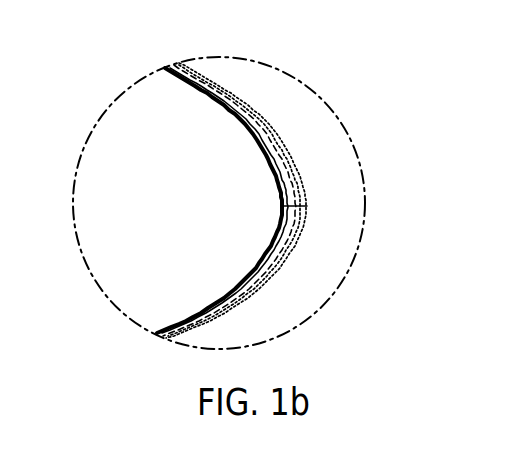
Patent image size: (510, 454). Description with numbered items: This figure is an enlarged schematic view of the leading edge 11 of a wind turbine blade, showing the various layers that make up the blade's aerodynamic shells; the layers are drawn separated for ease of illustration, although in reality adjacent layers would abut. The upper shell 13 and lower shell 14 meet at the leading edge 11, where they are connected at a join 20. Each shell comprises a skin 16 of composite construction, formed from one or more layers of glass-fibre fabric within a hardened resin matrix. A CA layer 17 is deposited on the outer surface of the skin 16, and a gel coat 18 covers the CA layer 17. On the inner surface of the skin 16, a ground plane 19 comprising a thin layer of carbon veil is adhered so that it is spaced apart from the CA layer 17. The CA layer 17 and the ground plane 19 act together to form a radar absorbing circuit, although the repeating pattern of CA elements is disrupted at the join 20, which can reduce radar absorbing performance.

The leading edge 11 is at (324, 82).
The upper shell 13 is at (249, 85).
The lower shell 14 is at (219, 222).
The skin 16 is at (219, 96).
The CA layer 17 is at (296, 190).
The gel coat 18 is at (307, 196).
The ground plane 19 is at (262, 143).
The join 20 is at (280, 219).